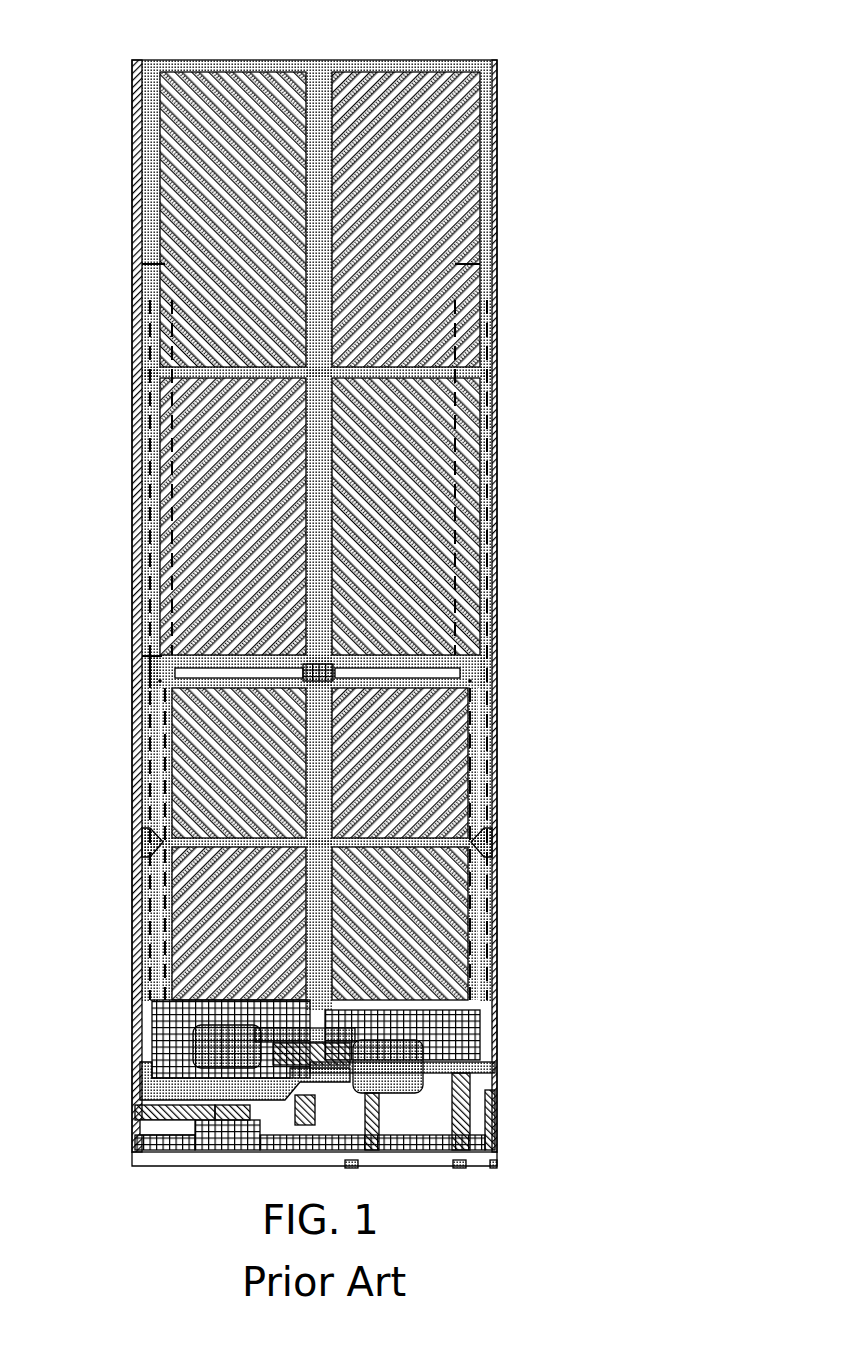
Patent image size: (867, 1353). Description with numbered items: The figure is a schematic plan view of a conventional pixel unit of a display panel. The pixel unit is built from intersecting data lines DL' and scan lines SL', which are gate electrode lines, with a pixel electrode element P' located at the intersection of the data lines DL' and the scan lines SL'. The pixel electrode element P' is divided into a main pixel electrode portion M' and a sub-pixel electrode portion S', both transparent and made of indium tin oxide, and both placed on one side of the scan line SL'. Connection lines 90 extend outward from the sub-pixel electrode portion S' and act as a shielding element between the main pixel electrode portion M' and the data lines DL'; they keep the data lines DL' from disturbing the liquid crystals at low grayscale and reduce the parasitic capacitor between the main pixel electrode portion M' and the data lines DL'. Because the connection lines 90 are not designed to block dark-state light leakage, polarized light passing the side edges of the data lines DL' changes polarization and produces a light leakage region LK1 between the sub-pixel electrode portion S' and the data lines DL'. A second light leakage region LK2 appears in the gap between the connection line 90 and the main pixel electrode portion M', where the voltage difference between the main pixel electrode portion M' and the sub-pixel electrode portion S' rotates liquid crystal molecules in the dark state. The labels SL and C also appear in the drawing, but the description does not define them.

The scan line SL is at (299, 36).
The sub-pixel electrode portion S' is at (339, 614).
The light leakage region LK1 is at (493, 425).
The data lines DL' is at (319, 541).
The main pixel electrode portion M' is at (345, 669).
The capacitor C is at (140, 780).
The connection lines 90 is at (142, 835).
The light leakage region LK2 is at (490, 925).
The pixel electrode element P' is at (274, 923).
The scan lines SL' is at (140, 1121).